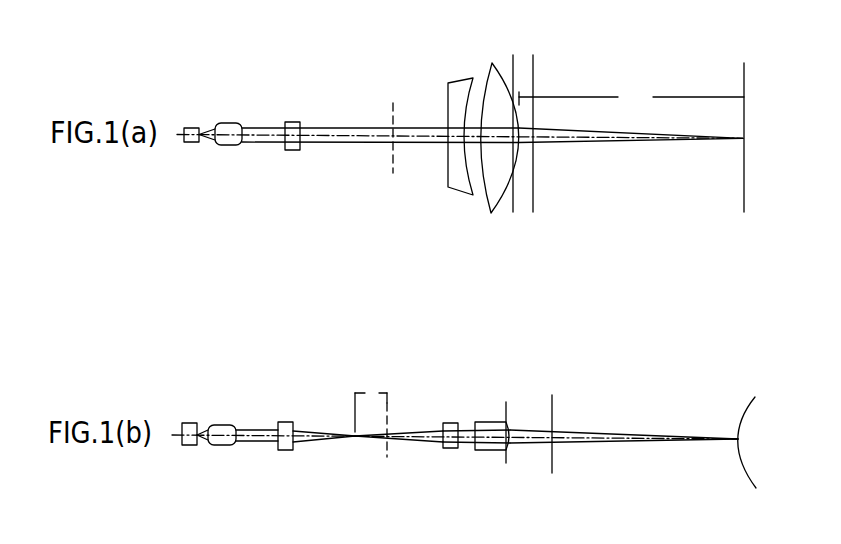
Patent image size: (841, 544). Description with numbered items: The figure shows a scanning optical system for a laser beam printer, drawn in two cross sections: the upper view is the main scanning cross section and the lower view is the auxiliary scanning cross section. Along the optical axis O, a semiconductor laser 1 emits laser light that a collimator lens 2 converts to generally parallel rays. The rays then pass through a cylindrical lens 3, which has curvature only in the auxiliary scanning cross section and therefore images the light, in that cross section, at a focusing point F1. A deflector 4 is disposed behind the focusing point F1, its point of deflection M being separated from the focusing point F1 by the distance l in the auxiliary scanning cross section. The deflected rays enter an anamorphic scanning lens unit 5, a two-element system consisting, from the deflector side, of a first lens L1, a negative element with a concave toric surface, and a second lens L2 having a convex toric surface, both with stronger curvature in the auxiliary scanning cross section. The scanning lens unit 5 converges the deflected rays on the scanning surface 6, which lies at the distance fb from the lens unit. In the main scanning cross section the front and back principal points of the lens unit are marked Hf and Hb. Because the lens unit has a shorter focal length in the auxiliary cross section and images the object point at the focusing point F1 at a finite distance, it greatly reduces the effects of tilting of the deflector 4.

In FIG. 1A, the semiconductor laser 1 is at (192, 143).
In FIG. 1B, the semiconductor laser 1 is at (192, 422).
In FIG. 1A, the collimator lens 2 is at (234, 146).
In FIG. 1B, the collimator lens 2 is at (225, 423).
In FIG. 1A, the cylindrical lens 3 is at (292, 151).
In FIG. 1B, the cylindrical lens 3 is at (287, 422).
In FIG. 1A, the deflector 4 is at (393, 175).
In FIG. 1B, the deflector 4 is at (390, 412).
In FIG. 1A, the anamorphic scanning lens unit 5 is at (480, 198).
In FIG. 1B, the anamorphic scanning lens unit 5 is at (467, 422).
In FIG. 1A, the scanning surface 6 is at (743, 202).
In FIG. 1B, the scanning surface 6 is at (745, 410).
In FIG. 1A, the optical axis O is at (330, 143).
In FIG. 1B, the optical axis O is at (567, 438).
In FIG. 1A, the first lens L1 is at (457, 198).
In FIG. 1B, the first lens L1 is at (453, 423).
In FIG. 1A, the second lens L2 is at (498, 197).
In FIG. 1B, the second lens L2 is at (482, 422).
In FIG. 1A, the front principal point Hf is at (506, 119).
In FIG. 1B, the front principal point Hf is at (504, 419).
In FIG. 1A, the back principal point Hb is at (542, 119).
In FIG. 1B, the back principal point Hb is at (554, 422).
In FIG. 1A, the back focal distance fb is at (631, 99).
In FIG. 1B, the focusing point F1 is at (353, 432).
In FIG. 1B, the distance between focusing point and point of deflection l is at (371, 403).
In FIG. 1B, the point of deflection M is at (383, 438).